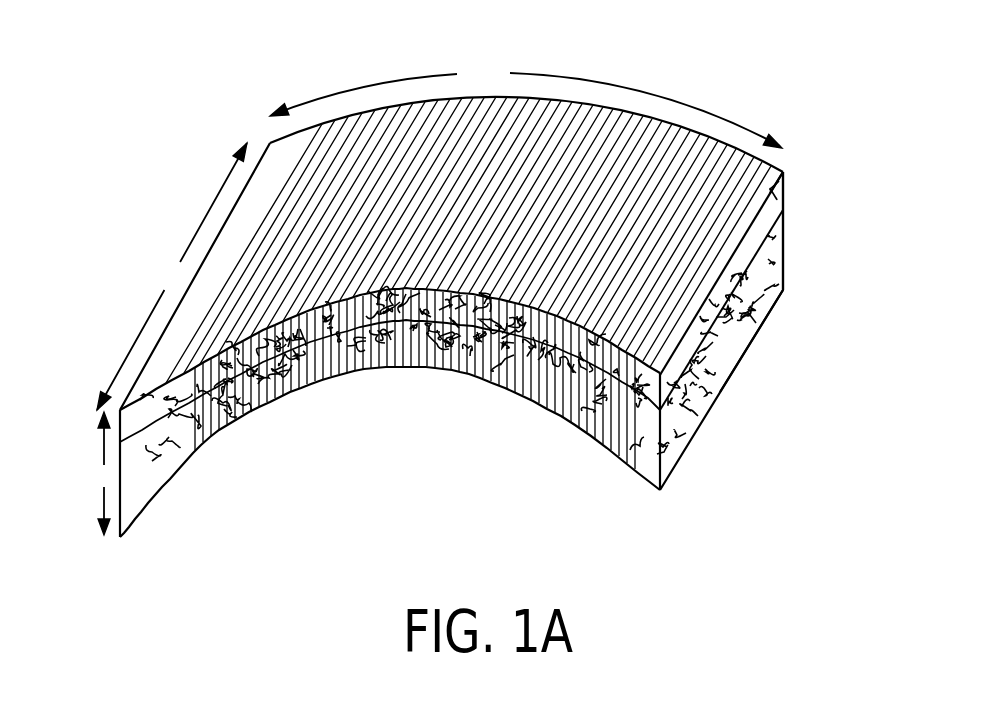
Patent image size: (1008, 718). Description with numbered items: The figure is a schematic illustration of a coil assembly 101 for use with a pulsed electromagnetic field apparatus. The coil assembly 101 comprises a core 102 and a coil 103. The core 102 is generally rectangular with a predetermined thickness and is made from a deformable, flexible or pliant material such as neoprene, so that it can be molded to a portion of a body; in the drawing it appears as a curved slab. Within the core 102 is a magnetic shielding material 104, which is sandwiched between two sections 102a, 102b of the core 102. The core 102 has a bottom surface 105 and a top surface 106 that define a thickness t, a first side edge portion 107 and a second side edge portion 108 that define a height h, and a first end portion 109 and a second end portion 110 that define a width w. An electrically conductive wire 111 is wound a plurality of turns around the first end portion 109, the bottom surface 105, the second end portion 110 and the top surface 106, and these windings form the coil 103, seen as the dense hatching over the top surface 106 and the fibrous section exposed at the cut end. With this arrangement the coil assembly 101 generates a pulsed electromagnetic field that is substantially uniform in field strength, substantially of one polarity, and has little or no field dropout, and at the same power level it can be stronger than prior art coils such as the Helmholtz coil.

The coil assembly 101 is at (687, 127).
The core 102 is at (297, 133).
The first section of the core 102a is at (786, 187).
The second section of the core 102b is at (783, 290).
The coil 103 is at (352, 115).
The magnetic shielding material 104 is at (777, 213).
The bottom surface 105 is at (615, 455).
The top surface 106 is at (784, 171).
The first side edge portion 107 is at (216, 240).
The second side edge portion 108 is at (747, 307).
The first end portion 109 is at (450, 373).
The second end portion 110 is at (610, 110).
The electrically conductive wire 111 is at (223, 427).